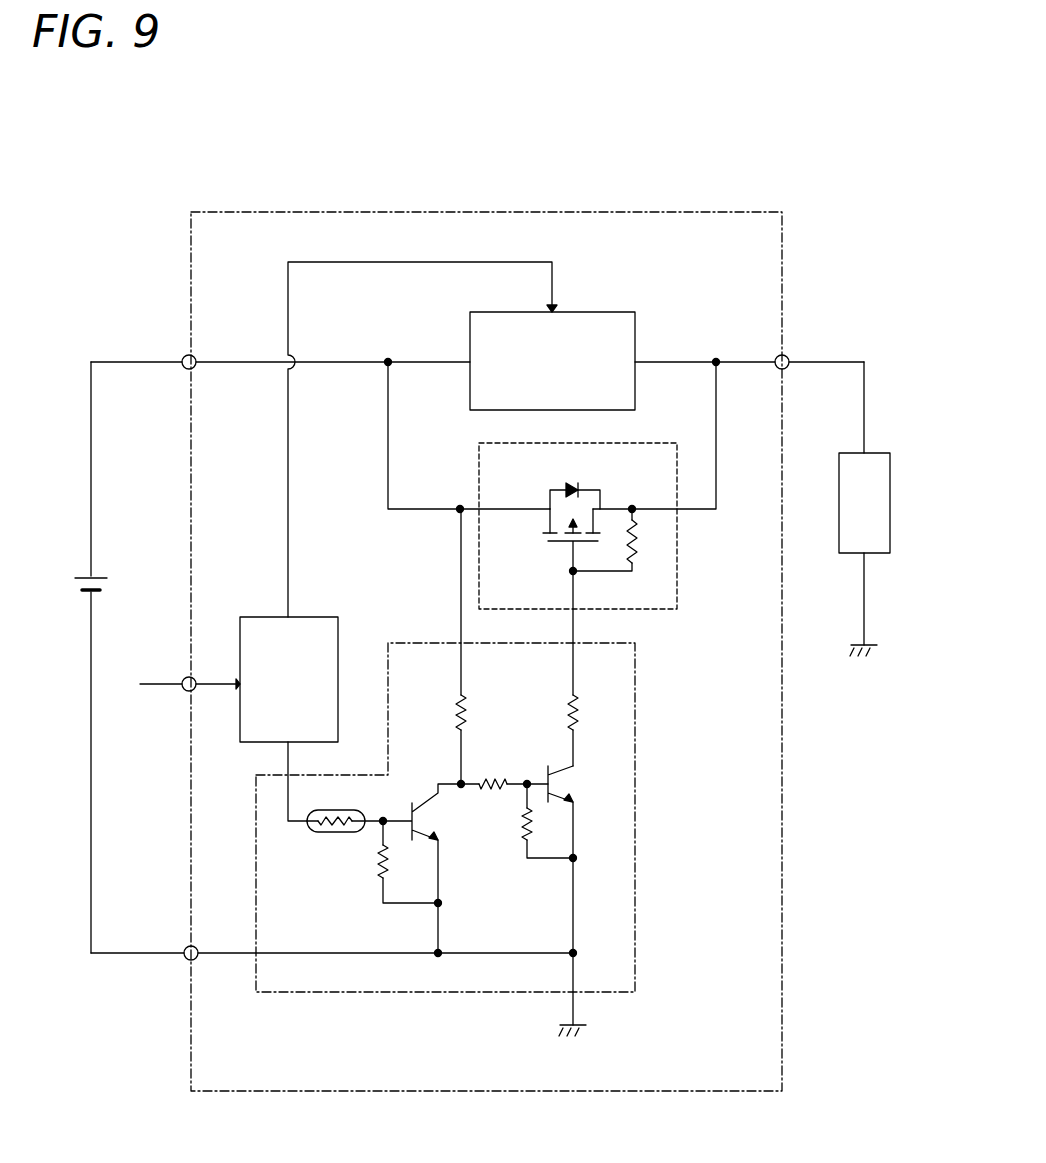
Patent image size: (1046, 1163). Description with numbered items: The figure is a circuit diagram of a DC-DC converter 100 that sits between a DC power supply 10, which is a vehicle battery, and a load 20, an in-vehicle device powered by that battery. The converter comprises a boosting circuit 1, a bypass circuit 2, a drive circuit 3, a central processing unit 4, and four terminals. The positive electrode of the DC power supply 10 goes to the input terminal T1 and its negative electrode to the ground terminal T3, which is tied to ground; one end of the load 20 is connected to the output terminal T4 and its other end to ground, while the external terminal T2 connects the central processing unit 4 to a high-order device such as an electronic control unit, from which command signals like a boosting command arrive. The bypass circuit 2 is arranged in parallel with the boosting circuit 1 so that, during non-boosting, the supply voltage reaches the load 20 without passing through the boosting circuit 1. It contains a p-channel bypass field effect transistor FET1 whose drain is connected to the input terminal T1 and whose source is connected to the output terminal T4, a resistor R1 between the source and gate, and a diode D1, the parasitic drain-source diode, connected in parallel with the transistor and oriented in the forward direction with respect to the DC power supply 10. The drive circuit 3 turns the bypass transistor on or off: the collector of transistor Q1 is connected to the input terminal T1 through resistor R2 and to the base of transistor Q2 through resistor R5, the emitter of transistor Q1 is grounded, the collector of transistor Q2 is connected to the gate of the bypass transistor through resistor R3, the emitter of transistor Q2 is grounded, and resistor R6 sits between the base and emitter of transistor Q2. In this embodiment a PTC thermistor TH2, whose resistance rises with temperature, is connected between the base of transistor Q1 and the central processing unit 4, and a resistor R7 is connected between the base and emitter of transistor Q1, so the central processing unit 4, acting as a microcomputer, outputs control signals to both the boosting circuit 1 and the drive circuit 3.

The DC-DC converter 100 is at (540, 211).
The boosting circuit 1 is at (600, 311).
The bypass circuit 2 is at (578, 506).
The drive circuit 3 is at (464, 786).
The CPU 4 is at (320, 617).
The DC power supply 10 is at (108, 586).
The load 20 is at (838, 508).
The input terminal T1 is at (182, 354).
The external terminal T2 is at (183, 677).
The ground terminal T3 is at (184, 946).
The output terminal T4 is at (789, 355).
The bypass field effect transistor FET1 is at (556, 530).
The diode D1 is at (575, 487).
The resistor R1 is at (616, 540).
The resistor R2 is at (447, 646).
The resistor R3 is at (559, 668).
The resistor R5 is at (504, 775).
The resistor R6 is at (534, 821).
The resistor R7 is at (395, 862).
The PTC thermistor TH2 is at (345, 812).
The transistor Q1 is at (422, 868).
The transistor Q2 is at (571, 895).